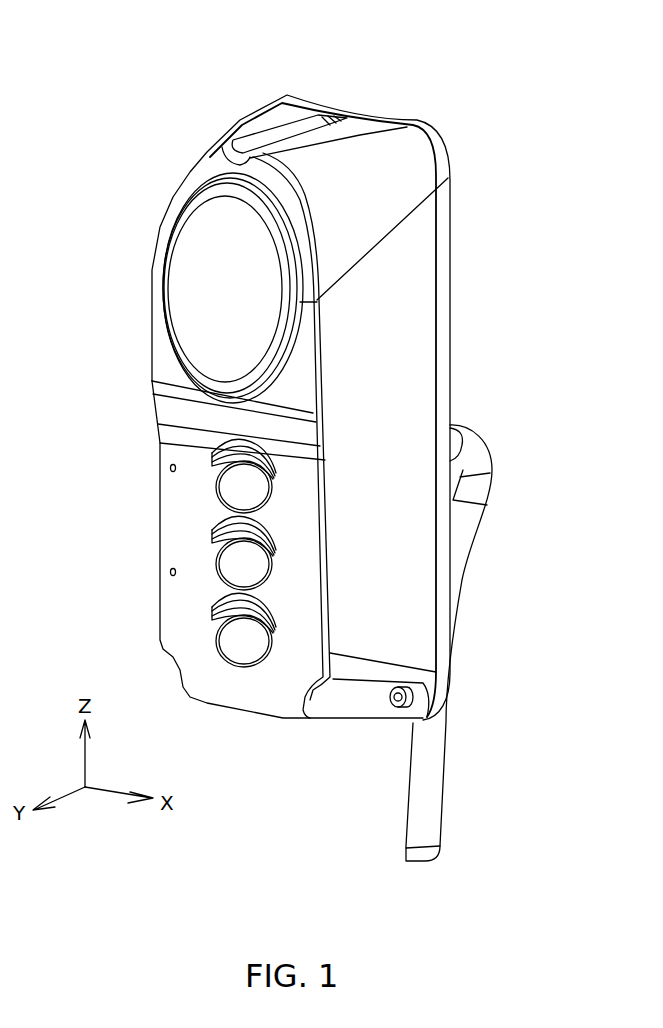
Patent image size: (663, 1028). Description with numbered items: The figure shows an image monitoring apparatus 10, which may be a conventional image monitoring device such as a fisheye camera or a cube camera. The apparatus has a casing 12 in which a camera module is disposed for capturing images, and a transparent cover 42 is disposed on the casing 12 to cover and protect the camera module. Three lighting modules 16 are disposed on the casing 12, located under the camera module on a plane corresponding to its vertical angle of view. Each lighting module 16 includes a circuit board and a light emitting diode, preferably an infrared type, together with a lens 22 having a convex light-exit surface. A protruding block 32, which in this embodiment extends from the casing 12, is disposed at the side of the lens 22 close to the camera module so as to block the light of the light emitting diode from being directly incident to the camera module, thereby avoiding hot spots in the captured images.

The image monitoring apparatus 10 is at (125, 75).
The casing 12 is at (412, 167).
The lighting module 16 is at (191, 489).
The lens 22 is at (252, 492).
The protruding block 32 is at (207, 463).
The transparent cover 42 is at (193, 268).